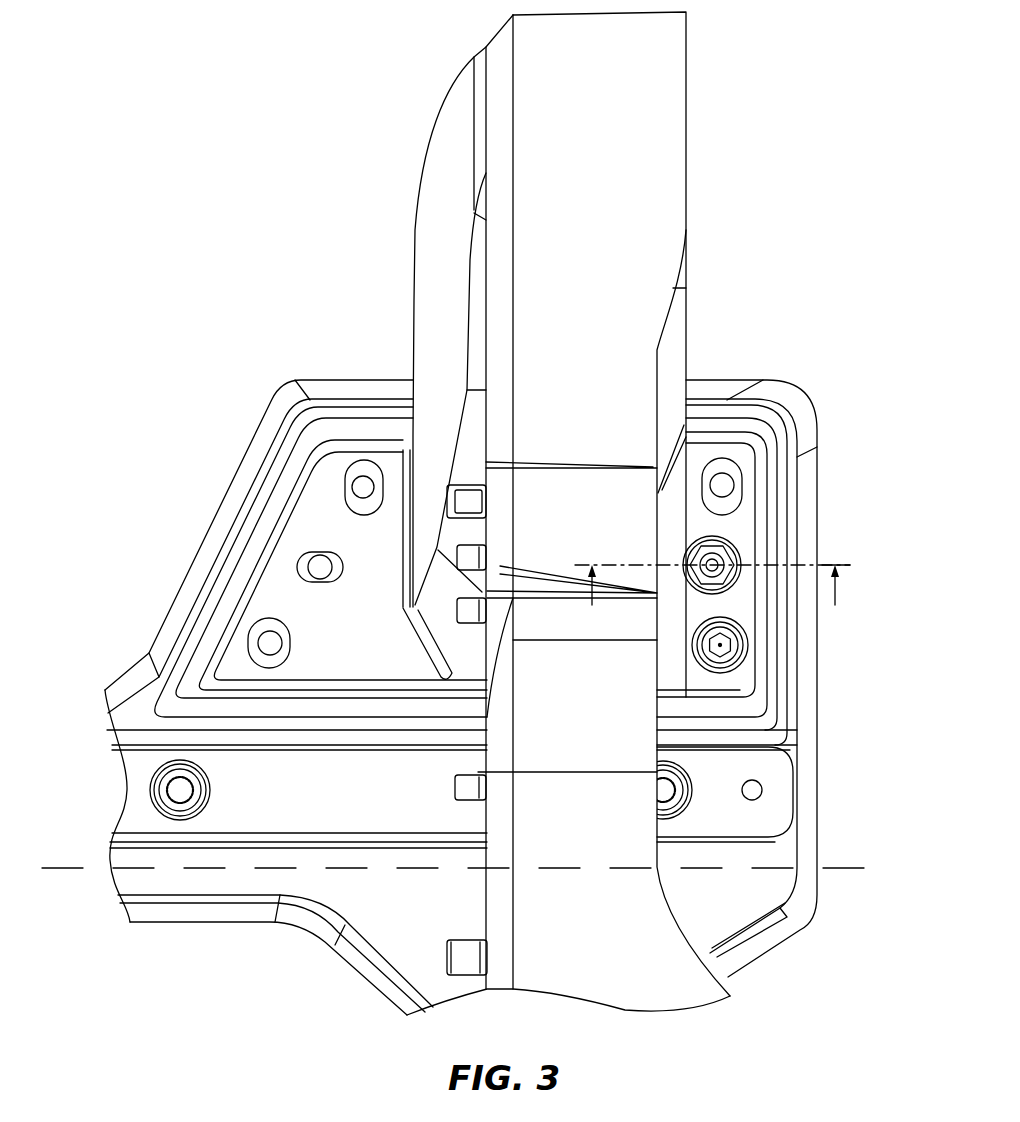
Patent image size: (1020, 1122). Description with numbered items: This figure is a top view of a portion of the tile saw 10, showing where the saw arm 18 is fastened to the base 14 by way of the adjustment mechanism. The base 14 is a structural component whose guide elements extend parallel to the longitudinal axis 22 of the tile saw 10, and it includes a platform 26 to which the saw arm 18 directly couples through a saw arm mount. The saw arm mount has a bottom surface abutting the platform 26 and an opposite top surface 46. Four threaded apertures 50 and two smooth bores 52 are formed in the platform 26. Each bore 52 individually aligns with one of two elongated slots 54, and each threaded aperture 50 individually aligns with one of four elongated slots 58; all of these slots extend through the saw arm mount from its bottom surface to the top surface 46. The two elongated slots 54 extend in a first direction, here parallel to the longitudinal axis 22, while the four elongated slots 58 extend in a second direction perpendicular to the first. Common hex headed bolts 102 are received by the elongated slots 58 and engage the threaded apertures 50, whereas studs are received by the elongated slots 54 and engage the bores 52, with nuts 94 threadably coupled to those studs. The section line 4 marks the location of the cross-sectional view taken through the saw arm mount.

The tile saw 10 is at (140, 128).
The base 14 is at (165, 912).
The saw arm 18 is at (686, 190).
The longitudinal axis 22 is at (848, 867).
The platform 26 is at (318, 380).
The top surface 46 is at (392, 567).
The threaded apertures 50 is at (365, 478).
The bores 52 is at (320, 556).
The elongated slots 54 is at (313, 589).
The elongated slots 58 is at (335, 483).
The nuts 94 is at (722, 555).
The bolts 102 is at (735, 648).
The section line 4- 4 is at (712, 601).